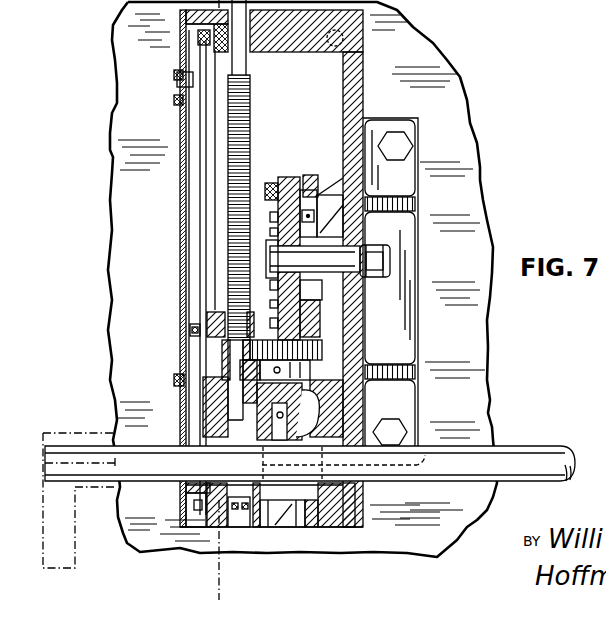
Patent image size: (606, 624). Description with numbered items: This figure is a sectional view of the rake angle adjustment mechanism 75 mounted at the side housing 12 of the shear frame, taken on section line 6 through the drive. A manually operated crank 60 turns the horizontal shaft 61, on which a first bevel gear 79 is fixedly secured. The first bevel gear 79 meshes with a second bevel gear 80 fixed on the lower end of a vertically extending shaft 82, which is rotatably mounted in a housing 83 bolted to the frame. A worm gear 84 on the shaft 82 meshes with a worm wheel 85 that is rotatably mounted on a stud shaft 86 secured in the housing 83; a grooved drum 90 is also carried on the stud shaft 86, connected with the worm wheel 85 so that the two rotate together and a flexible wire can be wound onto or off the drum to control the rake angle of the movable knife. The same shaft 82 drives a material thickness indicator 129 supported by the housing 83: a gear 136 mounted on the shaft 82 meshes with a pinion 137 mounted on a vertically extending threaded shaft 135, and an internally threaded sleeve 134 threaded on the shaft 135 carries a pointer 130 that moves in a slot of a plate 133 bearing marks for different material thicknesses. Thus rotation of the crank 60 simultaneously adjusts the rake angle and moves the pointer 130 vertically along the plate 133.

The side housing 12 is at (118, 48).
The material thickness indicator 129 is at (166, 203).
The plate 133 is at (200, 243).
The vertically extending shaft 135 is at (250, 88).
The internally threaded sleeve 134 is at (217, 313).
The pointer 130 is at (192, 327).
The pinion 137 is at (222, 352).
The worm gear 84 is at (272, 273).
The worm wheel 85 is at (283, 182).
The rake angle adjustment mechanism 75 is at (296, 166).
The grooved drum 90 is at (309, 180).
The stud shaft 86 is at (332, 255).
The gear 136 is at (322, 342).
The vertically extending shaft 82 is at (302, 393).
The second bevel gear 80 is at (300, 425).
The housing 83 is at (358, 308).
The first bevel gear 79 is at (297, 526).
The shaft 61 is at (152, 470).
The crank 60 is at (70, 556).
The section line 6- 6 is at (238, 567).